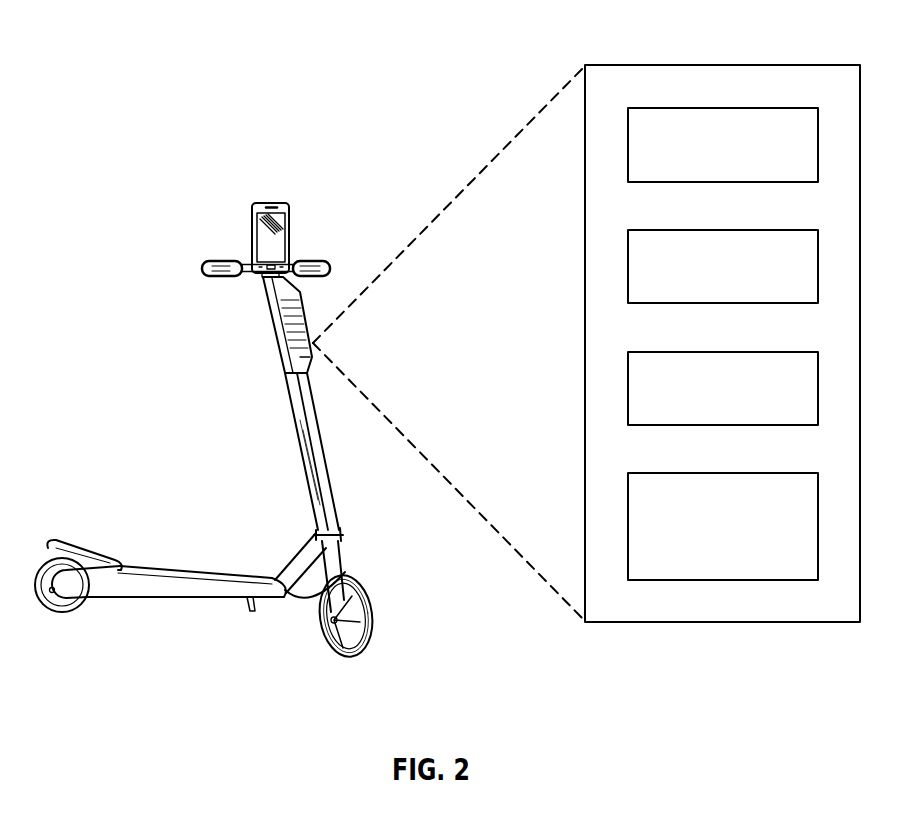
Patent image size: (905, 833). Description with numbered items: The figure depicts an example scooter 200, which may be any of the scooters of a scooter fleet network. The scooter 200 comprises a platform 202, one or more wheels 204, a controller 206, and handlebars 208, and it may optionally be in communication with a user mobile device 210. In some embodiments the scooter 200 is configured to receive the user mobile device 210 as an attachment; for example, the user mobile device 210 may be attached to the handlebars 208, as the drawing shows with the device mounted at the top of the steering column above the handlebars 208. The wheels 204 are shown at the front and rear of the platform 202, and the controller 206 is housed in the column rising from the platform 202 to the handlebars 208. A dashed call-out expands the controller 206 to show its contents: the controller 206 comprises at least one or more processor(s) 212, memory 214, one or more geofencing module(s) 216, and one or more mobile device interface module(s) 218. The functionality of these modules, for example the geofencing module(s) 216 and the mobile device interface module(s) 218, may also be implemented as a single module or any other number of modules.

The scooter 200 is at (124, 46).
The platform 202 is at (186, 603).
The wheels 204 is at (56, 621).
The controller 206 is at (266, 324).
The handlebars 208 is at (199, 267).
The user mobile device 210 is at (270, 198).
The processor(s) 212 is at (698, 108).
The memory 214 is at (698, 230).
The geofencing module(s) 216 is at (698, 352).
The mobile device interface module(s) 218 is at (698, 473).